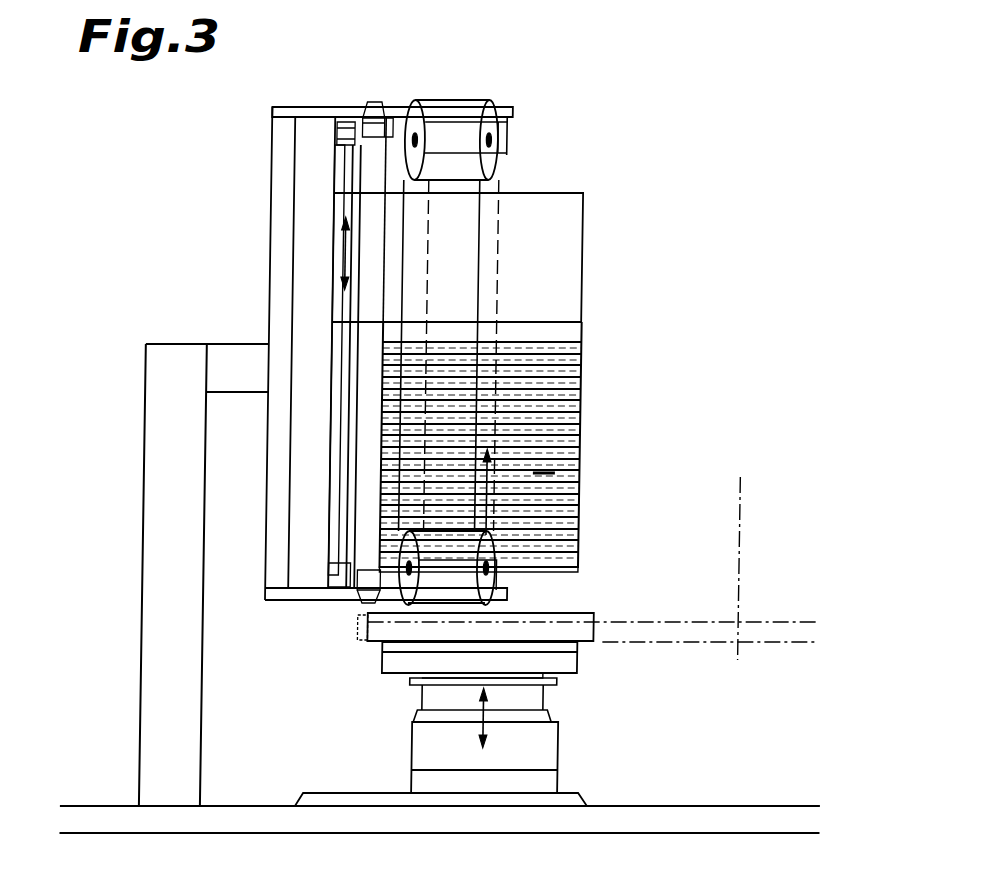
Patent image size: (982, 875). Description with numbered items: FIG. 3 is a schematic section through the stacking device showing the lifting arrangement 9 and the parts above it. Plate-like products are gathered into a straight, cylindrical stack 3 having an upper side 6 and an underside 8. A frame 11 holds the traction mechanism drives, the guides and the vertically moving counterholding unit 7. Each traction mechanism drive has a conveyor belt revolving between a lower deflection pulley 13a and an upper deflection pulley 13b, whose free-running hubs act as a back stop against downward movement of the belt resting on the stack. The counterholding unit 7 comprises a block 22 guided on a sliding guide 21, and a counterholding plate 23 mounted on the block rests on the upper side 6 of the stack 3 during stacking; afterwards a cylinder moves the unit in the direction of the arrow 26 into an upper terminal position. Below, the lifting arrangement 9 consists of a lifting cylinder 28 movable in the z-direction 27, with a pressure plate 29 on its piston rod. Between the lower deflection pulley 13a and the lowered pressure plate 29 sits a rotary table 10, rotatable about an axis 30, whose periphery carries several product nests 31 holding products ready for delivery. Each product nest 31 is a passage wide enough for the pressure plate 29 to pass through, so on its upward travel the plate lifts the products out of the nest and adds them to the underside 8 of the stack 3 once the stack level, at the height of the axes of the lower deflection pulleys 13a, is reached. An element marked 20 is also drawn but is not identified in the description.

The stack 3 is at (554, 474).
The upper side 6 is at (535, 327).
The counterholding unit 7 is at (631, 281).
The underside 8 is at (571, 571).
The lifting arrangement 9 is at (573, 741).
The rotary table 10 is at (808, 634).
The frame 11 is at (171, 560).
The lower deflection pulley 13a is at (499, 583).
The upper deflection pulley 13b is at (463, 102).
The sheet 20 is at (501, 522).
The sliding guide 21 is at (349, 357).
The block 22 is at (533, 217).
The counterholding plate 23 is at (563, 331).
The arrow 26 is at (349, 255).
The z-direction 27 is at (481, 722).
The lifting cylinder 28 is at (443, 687).
The pressure plate 29 is at (392, 647).
The axis 30 is at (748, 553).
The product nests 31 is at (589, 633).